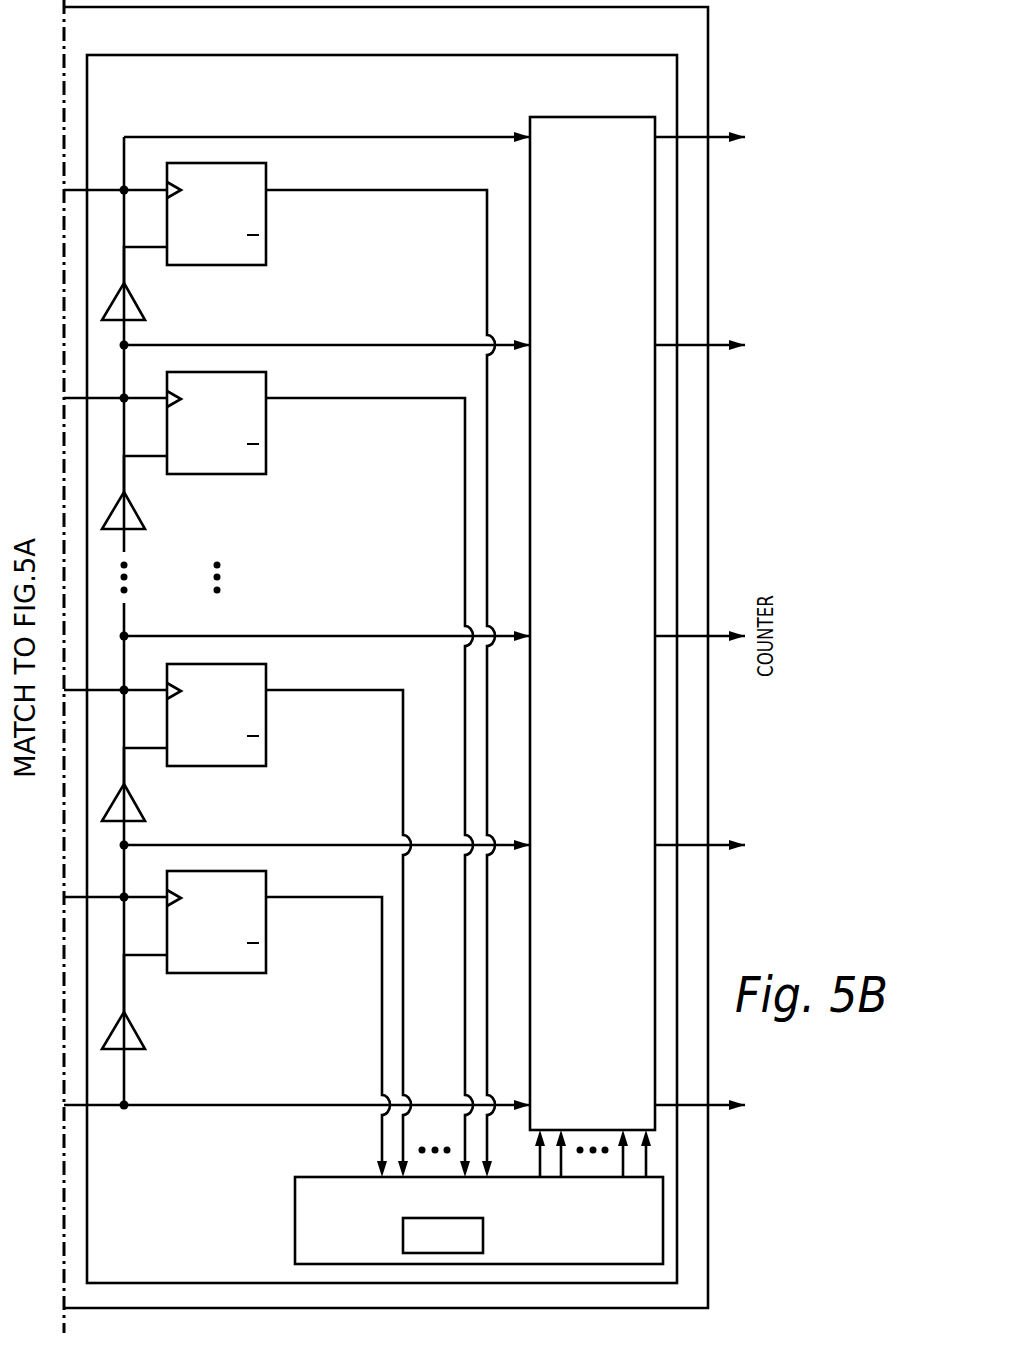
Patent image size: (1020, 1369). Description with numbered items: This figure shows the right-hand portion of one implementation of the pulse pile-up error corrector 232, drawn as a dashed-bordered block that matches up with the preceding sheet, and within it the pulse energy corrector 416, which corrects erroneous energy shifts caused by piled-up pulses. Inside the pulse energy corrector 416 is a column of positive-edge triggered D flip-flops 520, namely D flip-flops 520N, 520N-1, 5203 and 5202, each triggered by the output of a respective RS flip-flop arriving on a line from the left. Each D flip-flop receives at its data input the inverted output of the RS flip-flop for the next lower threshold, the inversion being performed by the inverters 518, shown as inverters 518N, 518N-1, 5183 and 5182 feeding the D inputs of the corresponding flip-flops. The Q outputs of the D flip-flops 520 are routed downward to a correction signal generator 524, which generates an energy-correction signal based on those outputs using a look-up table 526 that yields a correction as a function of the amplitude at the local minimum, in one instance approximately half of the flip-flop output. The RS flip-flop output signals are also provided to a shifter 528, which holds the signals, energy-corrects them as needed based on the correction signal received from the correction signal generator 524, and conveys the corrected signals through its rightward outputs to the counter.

The pulse pile-up error corrector 232 is at (708, 1225).
The pulse energy corrector 416 is at (197, 1283).
The inverters 518 is at (174, 662).
The inverter 518N is at (137, 307).
The inverter 518N-1 is at (137, 516).
The inverter 5183 is at (137, 808).
The inverter 5182 is at (137, 1036).
The D flip-flops 520 is at (276, 572).
The D flip-flop 520N is at (266, 218).
The D flip-flop 520N-1 is at (266, 427).
The D flip-flop 5203 is at (266, 719).
The D flip-flop 5202 is at (266, 926).
The correction signal generator 524 is at (295, 1222).
The look-up table (LUT) 526 is at (483, 1233).
The shifter 528 is at (600, 117).